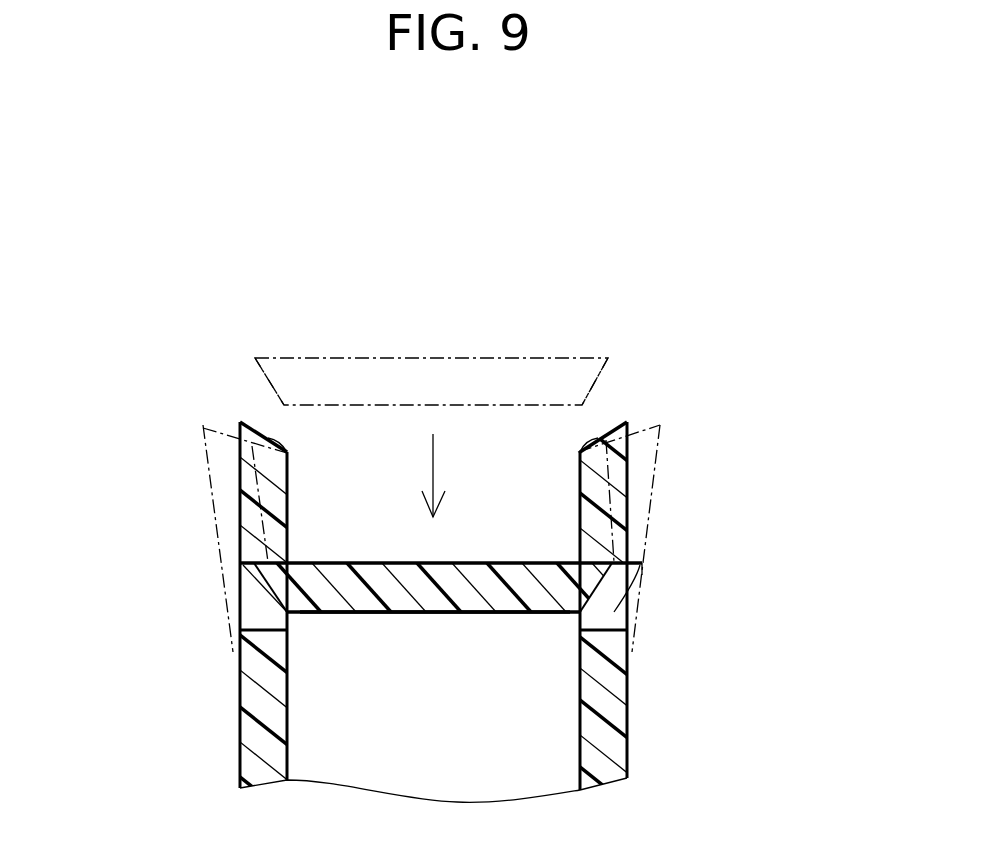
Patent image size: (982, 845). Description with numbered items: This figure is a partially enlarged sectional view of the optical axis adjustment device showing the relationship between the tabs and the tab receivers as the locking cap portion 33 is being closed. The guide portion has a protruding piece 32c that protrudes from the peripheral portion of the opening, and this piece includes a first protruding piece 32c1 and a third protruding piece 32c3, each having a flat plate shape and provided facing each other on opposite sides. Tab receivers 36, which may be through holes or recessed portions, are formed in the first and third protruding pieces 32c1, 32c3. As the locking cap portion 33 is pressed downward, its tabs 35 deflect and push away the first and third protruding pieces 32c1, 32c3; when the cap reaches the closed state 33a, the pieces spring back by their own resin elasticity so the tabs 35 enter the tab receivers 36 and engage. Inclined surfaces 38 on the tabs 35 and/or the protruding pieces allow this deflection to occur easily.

The protruding piece 32c is at (432, 618).
The first protruding piece 32c1 is at (257, 727).
The third protruding piece 32c3 is at (612, 722).
The locking cap portion 33 is at (377, 372).
The closed state 33a is at (507, 613).
The tab 35 is at (273, 367).
The tab receiver 36 is at (243, 565).
The inclined surface 38 is at (270, 437).